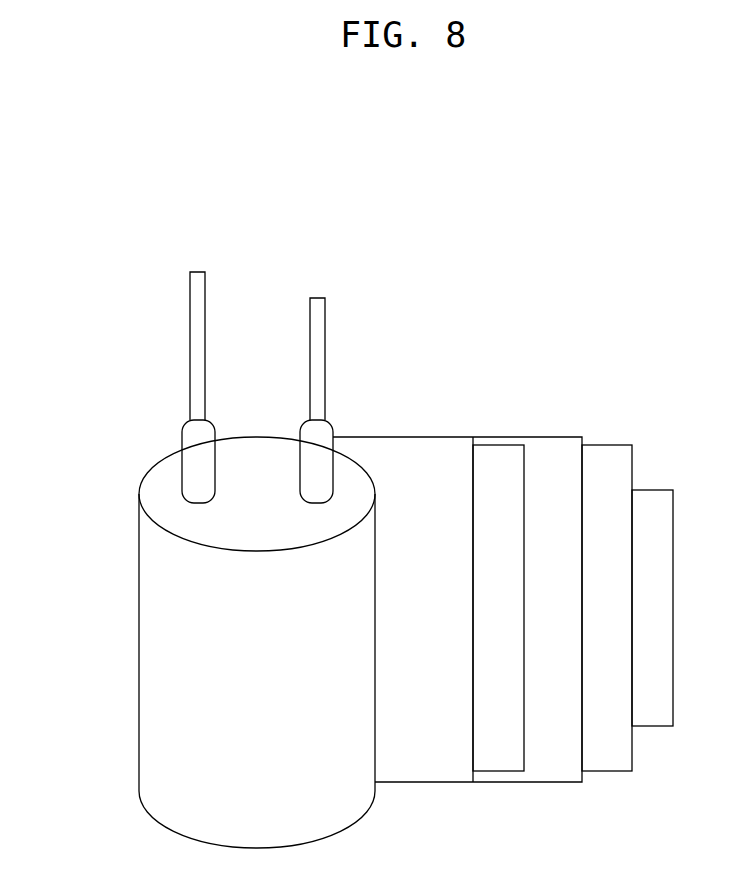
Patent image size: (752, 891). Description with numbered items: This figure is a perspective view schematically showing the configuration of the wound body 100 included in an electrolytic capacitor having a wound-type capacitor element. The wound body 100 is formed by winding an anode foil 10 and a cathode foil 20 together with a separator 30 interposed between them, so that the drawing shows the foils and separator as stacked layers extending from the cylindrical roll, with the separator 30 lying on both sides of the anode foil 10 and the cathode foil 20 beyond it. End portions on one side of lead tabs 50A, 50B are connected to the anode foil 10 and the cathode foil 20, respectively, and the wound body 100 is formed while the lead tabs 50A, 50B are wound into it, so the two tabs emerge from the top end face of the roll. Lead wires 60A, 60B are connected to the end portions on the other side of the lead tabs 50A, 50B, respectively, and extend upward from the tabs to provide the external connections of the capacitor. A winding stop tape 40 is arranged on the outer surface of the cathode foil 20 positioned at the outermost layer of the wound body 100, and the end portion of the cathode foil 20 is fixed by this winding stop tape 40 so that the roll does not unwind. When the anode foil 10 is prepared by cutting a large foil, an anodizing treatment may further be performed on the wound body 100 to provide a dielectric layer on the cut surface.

The wound body 100 is at (468, 275).
The anode foil 10 is at (510, 750).
The cathode foil 20 is at (608, 762).
The separator 30 is at (440, 750).
The winding stop tape 40 is at (652, 715).
The lead tab 50A is at (183, 437).
The lead tab 50B is at (337, 433).
The lead wire 60A is at (197, 318).
The lead wire 60B is at (317, 306).